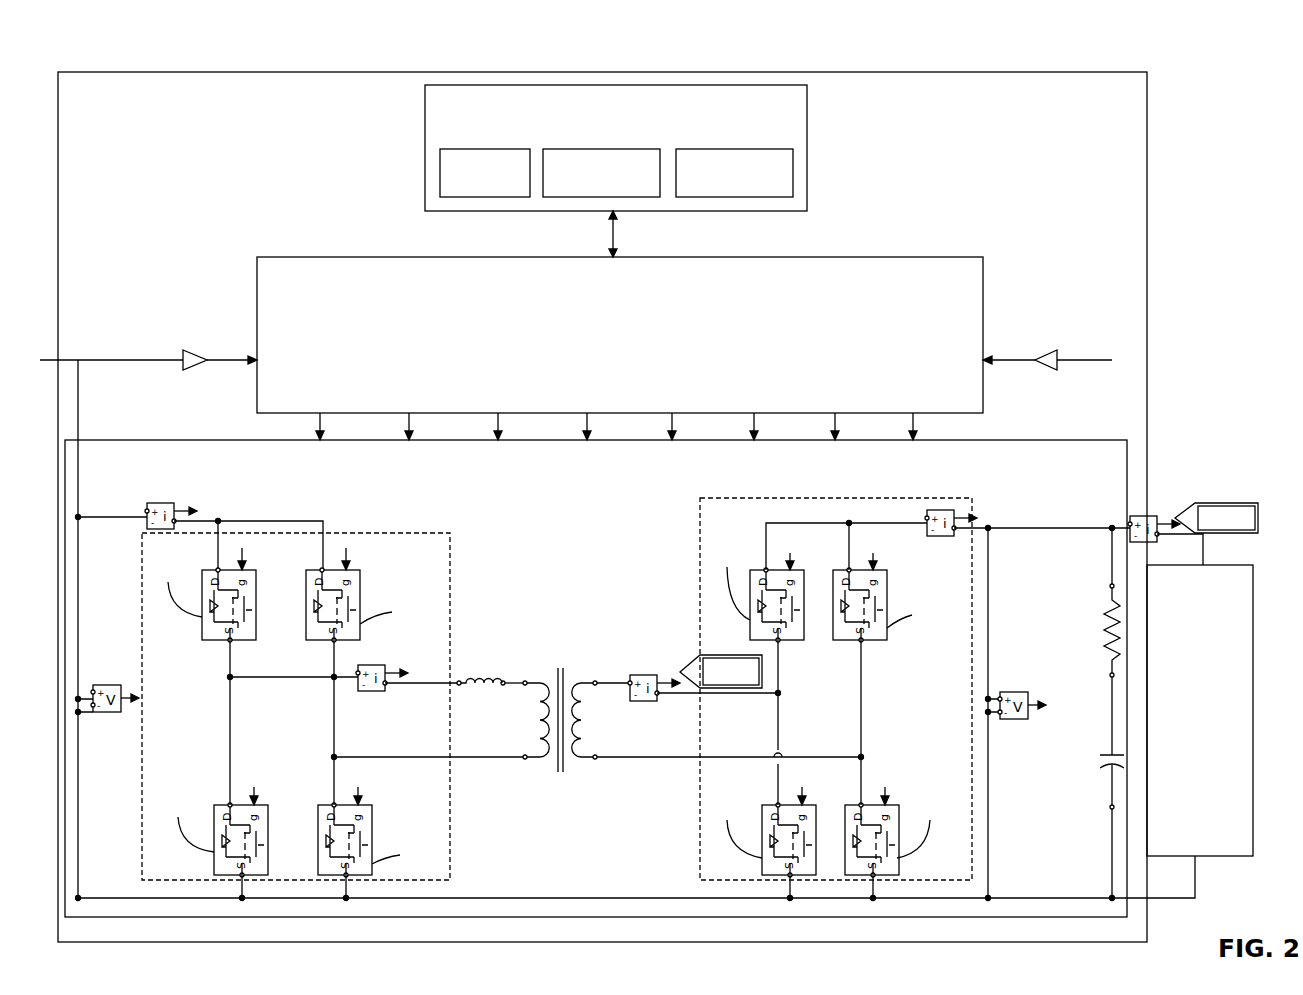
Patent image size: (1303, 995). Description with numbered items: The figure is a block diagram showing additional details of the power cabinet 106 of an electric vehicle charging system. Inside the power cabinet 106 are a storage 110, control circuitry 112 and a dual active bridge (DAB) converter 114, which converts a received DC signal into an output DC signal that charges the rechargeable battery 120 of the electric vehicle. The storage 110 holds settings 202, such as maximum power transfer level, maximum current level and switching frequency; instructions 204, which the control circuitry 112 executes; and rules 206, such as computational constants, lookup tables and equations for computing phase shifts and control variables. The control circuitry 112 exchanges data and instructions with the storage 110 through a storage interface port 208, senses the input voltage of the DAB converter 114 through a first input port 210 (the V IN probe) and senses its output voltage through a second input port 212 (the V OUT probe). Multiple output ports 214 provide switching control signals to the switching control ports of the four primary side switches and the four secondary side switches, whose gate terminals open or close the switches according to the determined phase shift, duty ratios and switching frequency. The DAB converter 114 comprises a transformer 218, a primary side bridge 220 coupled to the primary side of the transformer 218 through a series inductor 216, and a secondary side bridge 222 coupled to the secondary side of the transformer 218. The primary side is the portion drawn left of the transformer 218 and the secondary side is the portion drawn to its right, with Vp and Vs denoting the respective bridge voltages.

The power cabinet 106 is at (125, 72).
The storage 110 is at (425, 158).
The control circuitry 112 is at (320, 258).
The dual active bridge converter 114 is at (180, 440).
The rechargeable battery 120 is at (1230, 856).
The settings 202 is at (497, 149).
The instructions 204 is at (605, 149).
The rules 206 is at (735, 149).
The storage interface port 208 is at (607, 238).
The first input port 210 is at (345, 364).
The second input port 212 is at (880, 355).
The output ports 214 is at (685, 362).
The series inductor 216 is at (480, 678).
The transformer 218 is at (562, 668).
The primary side bridge 220 is at (385, 533).
The secondary side bridge 222 is at (768, 498).